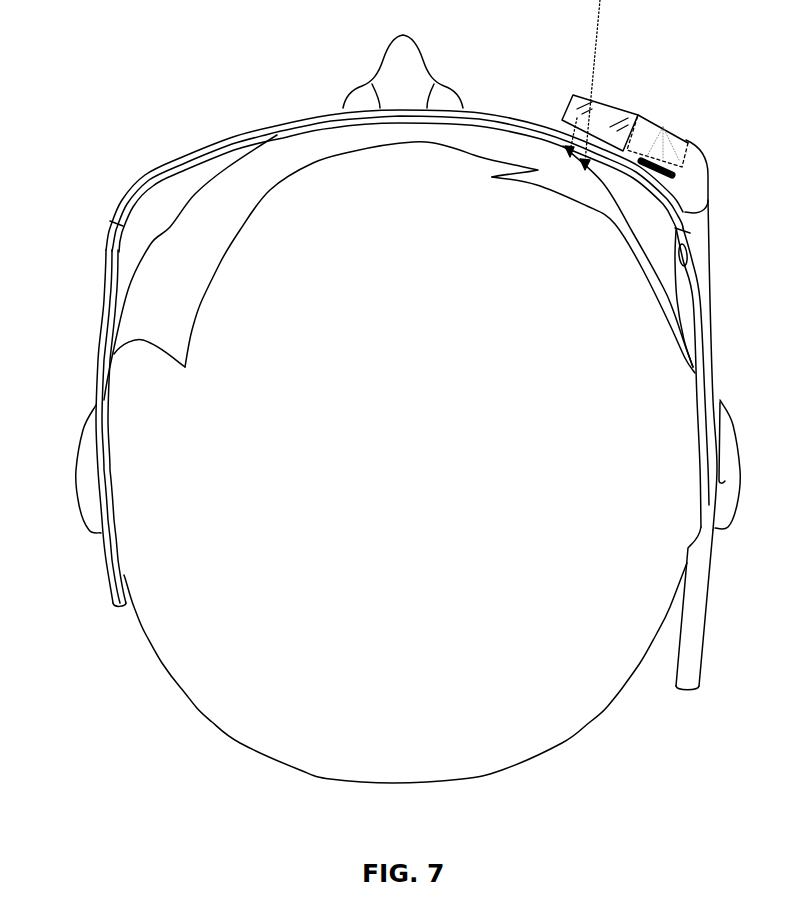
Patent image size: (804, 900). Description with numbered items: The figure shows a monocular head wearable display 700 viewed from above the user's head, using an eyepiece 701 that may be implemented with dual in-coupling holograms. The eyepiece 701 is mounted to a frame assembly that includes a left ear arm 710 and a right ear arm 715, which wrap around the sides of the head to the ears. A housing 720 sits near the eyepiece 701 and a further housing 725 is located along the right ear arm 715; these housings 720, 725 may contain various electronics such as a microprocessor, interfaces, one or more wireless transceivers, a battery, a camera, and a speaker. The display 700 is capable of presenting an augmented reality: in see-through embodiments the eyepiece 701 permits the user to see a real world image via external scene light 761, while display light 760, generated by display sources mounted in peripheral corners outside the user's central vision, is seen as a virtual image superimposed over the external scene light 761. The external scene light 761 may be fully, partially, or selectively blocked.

The head wearable display 700 is at (167, 85).
The eyepiece 701 is at (617, 108).
The left ear arm 710 is at (107, 300).
The right ear arm 715 is at (708, 348).
The housing 720 is at (702, 195).
The housing 725 is at (700, 612).
The display light 760 is at (576, 122).
The external scene light 761 is at (595, 59).